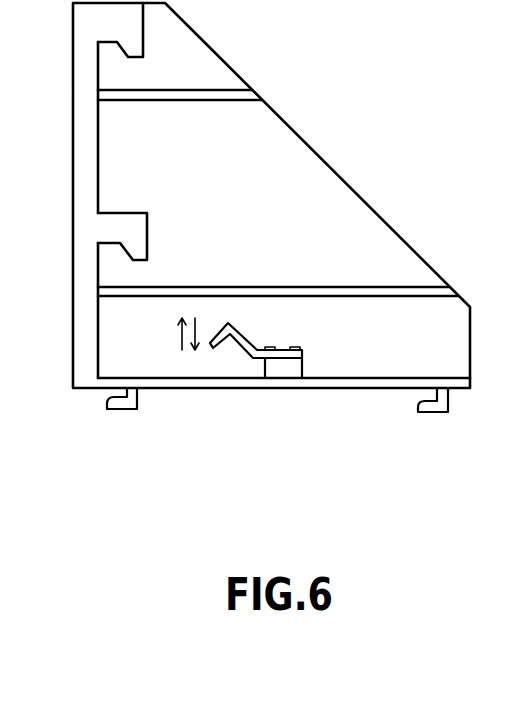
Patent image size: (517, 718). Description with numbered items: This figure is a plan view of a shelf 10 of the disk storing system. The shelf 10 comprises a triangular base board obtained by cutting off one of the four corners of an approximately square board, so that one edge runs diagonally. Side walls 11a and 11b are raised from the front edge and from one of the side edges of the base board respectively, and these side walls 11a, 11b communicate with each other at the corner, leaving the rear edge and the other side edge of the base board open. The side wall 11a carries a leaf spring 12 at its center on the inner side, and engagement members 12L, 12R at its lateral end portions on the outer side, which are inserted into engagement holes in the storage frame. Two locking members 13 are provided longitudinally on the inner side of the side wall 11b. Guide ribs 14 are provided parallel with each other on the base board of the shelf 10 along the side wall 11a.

The shelf 10 is at (73, 155).
The side wall 11a is at (258, 391).
The side wall 11b is at (73, 272).
The leaf spring 12 is at (232, 359).
The engagement member 12L is at (112, 410).
The engagement member 12R is at (430, 413).
The locking member 13 is at (125, 52).
The guide rib 14 is at (230, 70).